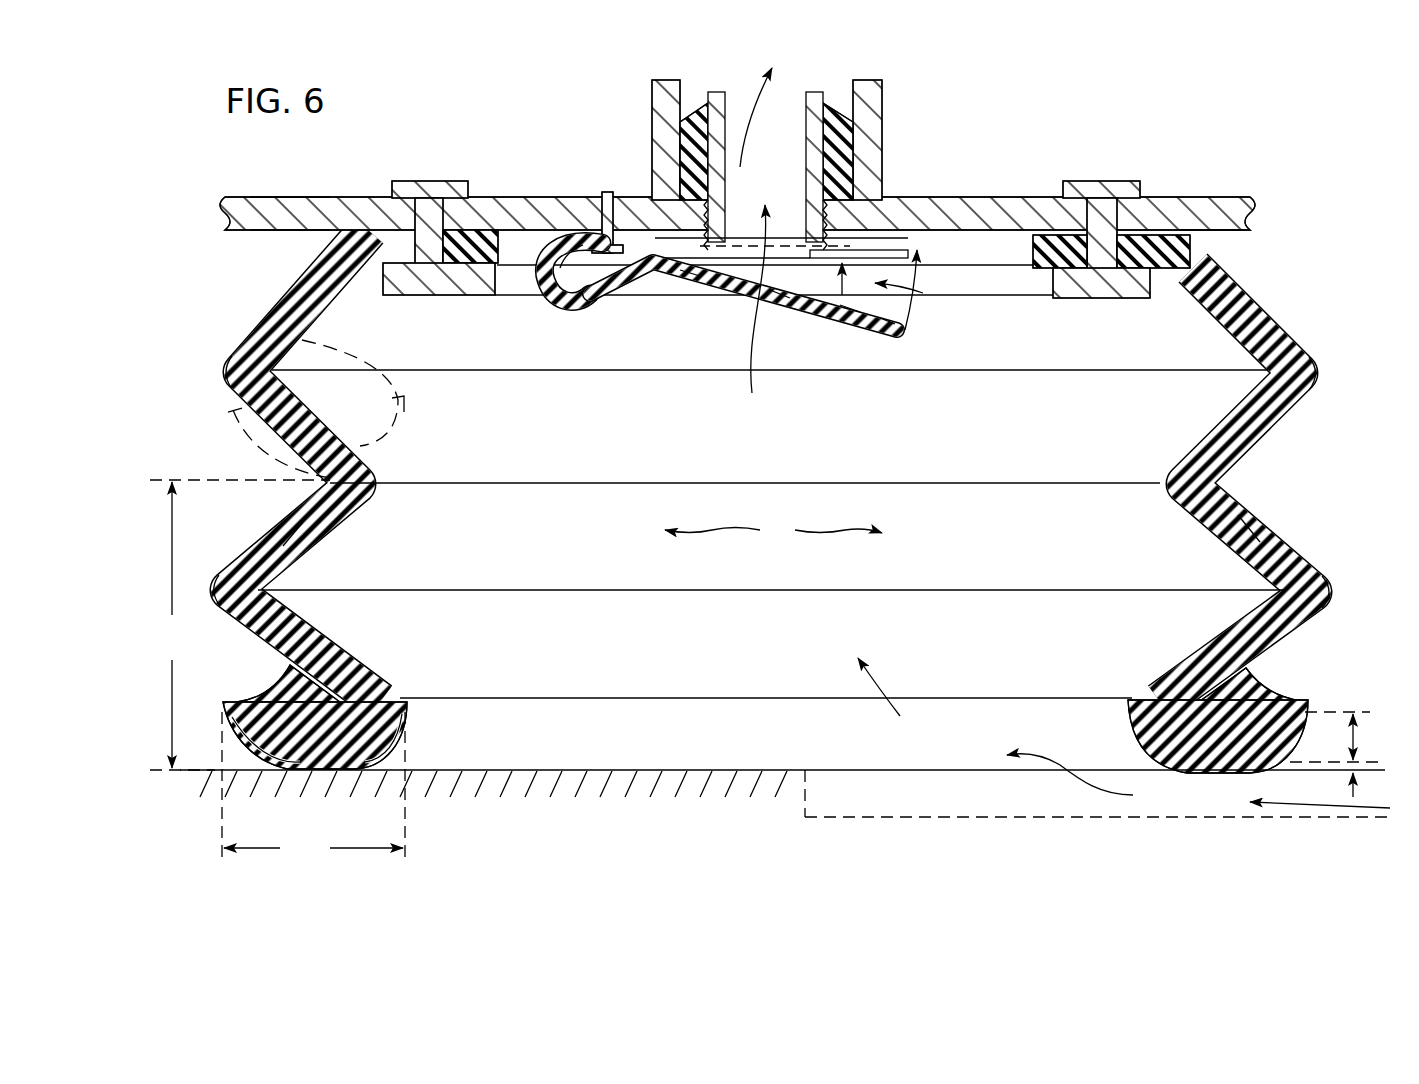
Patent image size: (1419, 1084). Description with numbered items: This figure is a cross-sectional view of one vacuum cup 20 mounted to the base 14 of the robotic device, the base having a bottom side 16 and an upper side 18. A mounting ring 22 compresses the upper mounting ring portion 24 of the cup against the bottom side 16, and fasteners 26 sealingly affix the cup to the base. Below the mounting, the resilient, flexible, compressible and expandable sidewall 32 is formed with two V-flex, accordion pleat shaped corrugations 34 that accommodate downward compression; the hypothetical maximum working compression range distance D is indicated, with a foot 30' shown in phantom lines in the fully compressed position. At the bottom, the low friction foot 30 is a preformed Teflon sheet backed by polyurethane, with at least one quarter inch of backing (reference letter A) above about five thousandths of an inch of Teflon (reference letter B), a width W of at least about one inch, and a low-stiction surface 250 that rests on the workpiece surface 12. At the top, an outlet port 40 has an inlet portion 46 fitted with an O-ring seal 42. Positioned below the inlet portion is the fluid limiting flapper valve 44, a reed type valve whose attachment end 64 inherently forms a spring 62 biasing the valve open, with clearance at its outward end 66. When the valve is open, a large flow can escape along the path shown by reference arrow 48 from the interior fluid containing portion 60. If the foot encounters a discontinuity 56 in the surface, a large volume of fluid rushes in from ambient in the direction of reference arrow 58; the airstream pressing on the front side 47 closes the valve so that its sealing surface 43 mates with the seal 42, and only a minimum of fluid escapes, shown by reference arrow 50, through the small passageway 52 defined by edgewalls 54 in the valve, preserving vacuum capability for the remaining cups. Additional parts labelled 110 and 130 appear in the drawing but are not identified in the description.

The workpiece surface 12 is at (812, 792).
The base 14 is at (222, 212).
The bottom side 16 is at (270, 235).
The upper side 18 is at (280, 197).
The vacuum cup 20 is at (336, 420).
The mounting ring 22 is at (1138, 300).
The upper mounting ring portion 24 is at (493, 232).
The fasteners 26 is at (440, 182).
The low friction foot 30 is at (765, 760).
The foot in fully compressed position 30' is at (349, 409).
The sidewall 32 is at (286, 530).
The corrugations 34 is at (222, 375).
The outlet port 40 is at (808, 140).
The seal 42 is at (880, 232).
The sealing surface 43 is at (874, 322).
The fluid limiting flapper valve 44 is at (827, 312).
The inlet portion 46 is at (842, 258).
The front side 47 is at (694, 285).
The outlet path reference arrow 48 is at (915, 455).
The minimum flow reference arrow 50 is at (750, 92).
The small passageway 52 is at (762, 292).
The edgewalls 54 is at (792, 308).
The discontinuity 56 is at (1062, 814).
The inflow reference arrow 58 is at (890, 705).
The interior fluid containing portion 60 is at (773, 531).
The spring 62 is at (572, 306).
The attachment end 64 is at (600, 205).
The outward end 66 is at (900, 340).
The nut 110 is at (652, 123).
The hinge loop 130 is at (667, 305).
The low-stiction surface 250 is at (404, 742).
The polyurethane backing thickness A is at (1375, 725).
The Teflon portion thickness B is at (1375, 763).
The maximum working compression range distance D is at (240, 625).
The foot width W is at (313, 787).